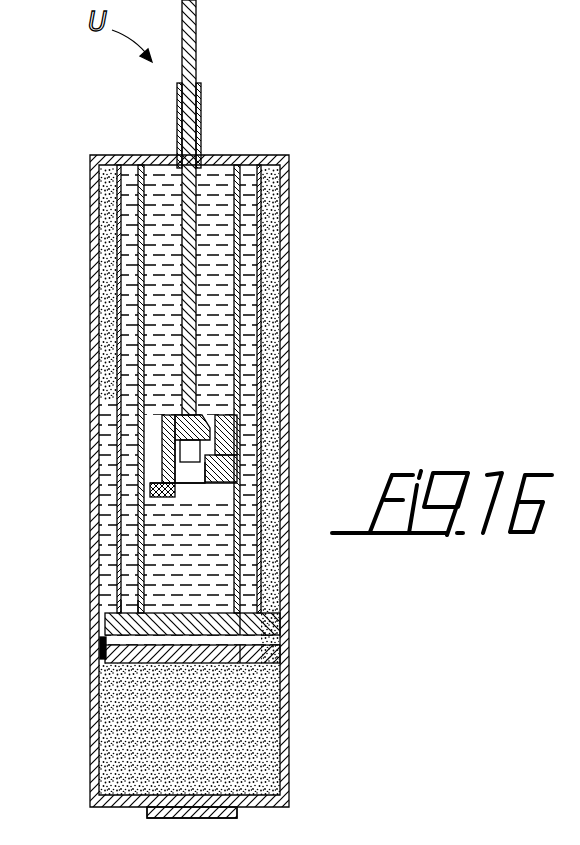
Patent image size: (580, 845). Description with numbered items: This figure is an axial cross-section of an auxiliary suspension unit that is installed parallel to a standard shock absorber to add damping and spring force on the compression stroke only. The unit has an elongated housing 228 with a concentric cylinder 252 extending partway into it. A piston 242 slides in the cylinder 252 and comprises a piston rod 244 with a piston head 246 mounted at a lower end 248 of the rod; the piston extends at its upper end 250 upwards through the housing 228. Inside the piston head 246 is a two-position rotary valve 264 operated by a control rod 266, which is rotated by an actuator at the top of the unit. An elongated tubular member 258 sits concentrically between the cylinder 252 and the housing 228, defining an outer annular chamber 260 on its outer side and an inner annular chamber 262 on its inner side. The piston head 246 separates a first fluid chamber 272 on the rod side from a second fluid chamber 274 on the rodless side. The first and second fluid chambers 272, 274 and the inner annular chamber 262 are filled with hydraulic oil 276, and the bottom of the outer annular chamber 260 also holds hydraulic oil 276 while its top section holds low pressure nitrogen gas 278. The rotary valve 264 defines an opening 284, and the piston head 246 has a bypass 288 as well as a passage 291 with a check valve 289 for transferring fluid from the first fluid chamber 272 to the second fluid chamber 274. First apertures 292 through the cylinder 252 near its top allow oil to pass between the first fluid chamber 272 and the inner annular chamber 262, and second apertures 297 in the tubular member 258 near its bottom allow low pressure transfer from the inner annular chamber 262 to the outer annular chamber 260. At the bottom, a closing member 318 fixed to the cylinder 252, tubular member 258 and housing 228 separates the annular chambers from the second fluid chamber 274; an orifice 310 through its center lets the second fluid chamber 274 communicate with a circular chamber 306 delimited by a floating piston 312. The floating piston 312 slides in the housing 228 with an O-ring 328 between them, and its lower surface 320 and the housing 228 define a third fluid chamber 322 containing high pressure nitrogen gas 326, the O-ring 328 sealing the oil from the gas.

The elongated housing 228 is at (288, 265).
The piston 242 is at (176, 226).
The piston rod 244 is at (136, 345).
The piston head 246 is at (180, 432).
The lower end of piston rod 248 is at (150, 398).
The upper end of piston 250 is at (177, 125).
The cylinder 252 is at (118, 290).
The elongated tubular member 258 is at (268, 180).
The outer annular chamber 260 is at (268, 478).
The inner annular chamber 262 is at (248, 314).
The two-position rotary valve 264 is at (165, 442).
The control rod 266 is at (268, 223).
The first fluid chamber 272 is at (148, 258).
The second fluid chamber 274 is at (210, 550).
The hydraulic oil 276 is at (228, 357).
The low pressure nitrogen gas 278 is at (108, 178).
The opening 284 is at (212, 452).
The bypass 288 is at (240, 420).
The check valve 289 is at (152, 499).
The passage 291 is at (160, 422).
The first apertures 292 is at (232, 210).
The second apertures 297 is at (262, 600).
The circular chamber 306 is at (263, 640).
The orifice 310 is at (143, 612).
The floating piston 312 is at (270, 660).
The closing member 318 is at (106, 636).
The lower surface of floating piston 320 is at (143, 665).
The third fluid chamber 322 is at (258, 762).
The high pressure nitrogen gas 326 is at (128, 715).
The O-ring 328 is at (103, 648).